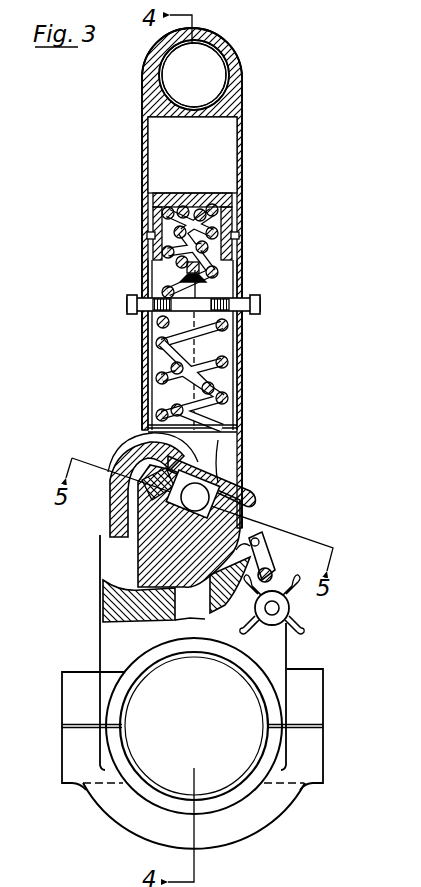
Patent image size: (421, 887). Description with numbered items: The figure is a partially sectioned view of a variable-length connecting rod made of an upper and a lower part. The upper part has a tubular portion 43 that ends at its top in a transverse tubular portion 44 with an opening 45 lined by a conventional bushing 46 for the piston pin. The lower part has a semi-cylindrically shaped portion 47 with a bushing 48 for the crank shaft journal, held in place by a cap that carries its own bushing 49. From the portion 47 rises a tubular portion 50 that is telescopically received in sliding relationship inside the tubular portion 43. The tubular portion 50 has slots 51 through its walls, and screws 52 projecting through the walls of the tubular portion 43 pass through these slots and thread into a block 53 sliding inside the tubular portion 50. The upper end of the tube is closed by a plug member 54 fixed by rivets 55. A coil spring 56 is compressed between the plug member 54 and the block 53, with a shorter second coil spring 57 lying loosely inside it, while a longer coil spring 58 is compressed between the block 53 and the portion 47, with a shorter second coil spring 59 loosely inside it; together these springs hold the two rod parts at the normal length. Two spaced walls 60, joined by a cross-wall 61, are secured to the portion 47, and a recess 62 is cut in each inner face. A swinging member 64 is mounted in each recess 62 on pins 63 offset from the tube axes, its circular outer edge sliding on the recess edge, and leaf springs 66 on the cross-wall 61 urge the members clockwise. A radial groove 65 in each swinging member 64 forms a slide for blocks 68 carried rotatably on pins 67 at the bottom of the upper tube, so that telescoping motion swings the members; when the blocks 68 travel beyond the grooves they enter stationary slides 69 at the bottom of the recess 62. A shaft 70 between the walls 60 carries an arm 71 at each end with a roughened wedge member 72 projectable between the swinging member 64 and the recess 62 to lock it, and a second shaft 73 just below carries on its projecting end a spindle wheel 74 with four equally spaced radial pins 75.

The tubular portion 43 is at (240, 162).
The transverse tubular portion 44 is at (210, 37).
The opening 45 is at (230, 63).
The bushing 46 is at (226, 76).
The semi-cylindrically shaped portion 47 is at (302, 677).
The bushing 48 is at (192, 650).
The bushing 49 is at (128, 767).
The tubular portion 50 is at (236, 244).
The slots 51 is at (150, 272).
The screws 52 is at (128, 306).
The block 53 is at (182, 313).
The plug member 54 is at (218, 195).
The rivets 55 is at (150, 236).
The coil spring 56 is at (200, 266).
The second coil spring 57 is at (186, 262).
The coil spring 58 is at (222, 410).
The second coil spring 59 is at (160, 367).
The walls 60 is at (112, 638).
The cross-wall 61 is at (112, 516).
The recess 62 is at (116, 557).
The pins 63 is at (143, 488).
The swinging member 64 is at (150, 538).
The groove 65 is at (226, 497).
The leaf springs 66 is at (124, 447).
The pins 67 is at (195, 490).
The blocks 68 is at (207, 513).
The stationary slides 69 is at (202, 610).
The shaft 70 is at (275, 569).
The arm 71 is at (261, 553).
The wedge member 72 is at (240, 548).
The second shaft 73 is at (278, 608).
The spindle wheel 74 is at (272, 622).
The radial pins 75 is at (298, 627).